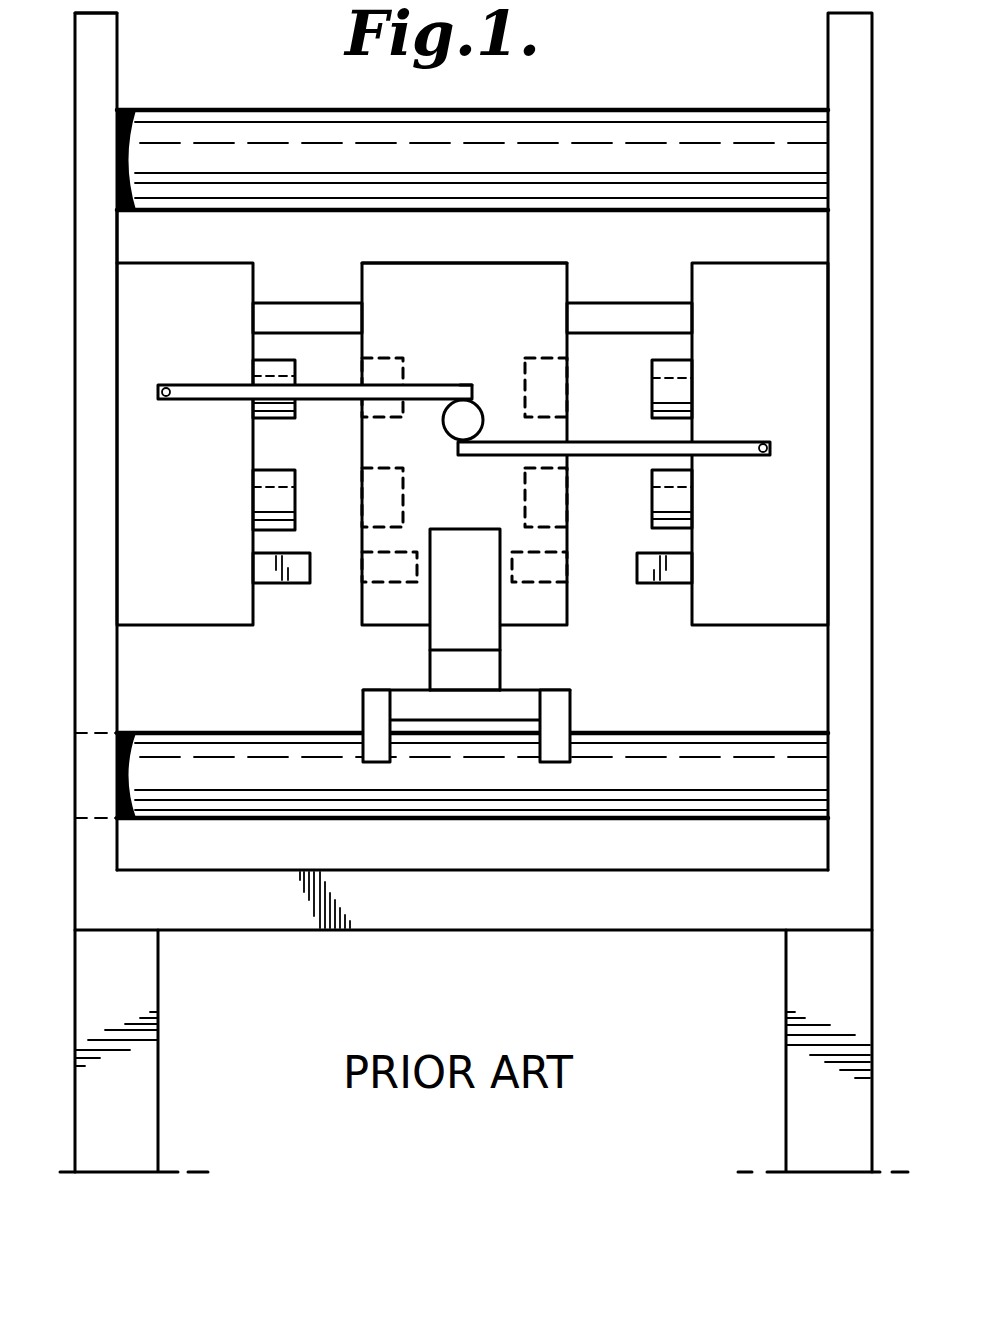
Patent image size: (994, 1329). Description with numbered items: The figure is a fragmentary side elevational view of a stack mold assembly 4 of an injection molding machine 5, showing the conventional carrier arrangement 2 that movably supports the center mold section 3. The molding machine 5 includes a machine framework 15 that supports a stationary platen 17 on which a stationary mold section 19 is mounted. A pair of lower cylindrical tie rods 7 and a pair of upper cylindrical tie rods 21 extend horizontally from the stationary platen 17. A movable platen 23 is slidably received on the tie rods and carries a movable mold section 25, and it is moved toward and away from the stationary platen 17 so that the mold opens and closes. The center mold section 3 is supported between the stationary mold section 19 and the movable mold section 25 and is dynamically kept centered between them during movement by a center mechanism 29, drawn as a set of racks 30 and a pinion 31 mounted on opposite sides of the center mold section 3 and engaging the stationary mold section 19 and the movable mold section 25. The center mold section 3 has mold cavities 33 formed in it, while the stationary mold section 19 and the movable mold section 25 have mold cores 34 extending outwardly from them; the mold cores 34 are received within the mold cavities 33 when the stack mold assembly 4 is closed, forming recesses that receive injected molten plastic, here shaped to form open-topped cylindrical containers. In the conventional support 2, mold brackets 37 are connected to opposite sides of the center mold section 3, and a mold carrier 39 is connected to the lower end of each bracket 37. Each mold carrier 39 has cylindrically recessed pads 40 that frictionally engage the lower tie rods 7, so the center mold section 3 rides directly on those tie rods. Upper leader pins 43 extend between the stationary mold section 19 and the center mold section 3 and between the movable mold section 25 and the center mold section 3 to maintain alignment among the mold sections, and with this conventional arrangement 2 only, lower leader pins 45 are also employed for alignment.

The conventional carrier arrangement 2 is at (387, 671).
The center mold section 3 is at (538, 276).
The stack mold assembly 4 is at (363, 257).
The injection molding machine 5 is at (185, 97).
The lower tie rod 7 is at (195, 788).
The machine framework 15 is at (786, 975).
The stationary platen 17 is at (828, 700).
The stationary mold section 19 is at (702, 608).
The upper tie rod 21 is at (690, 125).
The movable platen 23 is at (105, 236).
The movable mold section 25 is at (178, 608).
The center mechanism 29 is at (463, 386).
The rack 30 is at (186, 384).
The pinion 31 is at (445, 422).
The mold cavity 33 is at (525, 495).
The mold core 34 is at (270, 484).
The mold bracket 37 is at (486, 602).
The mold carrier 39 is at (370, 702).
The cylindrically recessed pad 40 is at (363, 748).
The upper leader pin 43 is at (262, 318).
The lower leader pin 45 is at (270, 572).